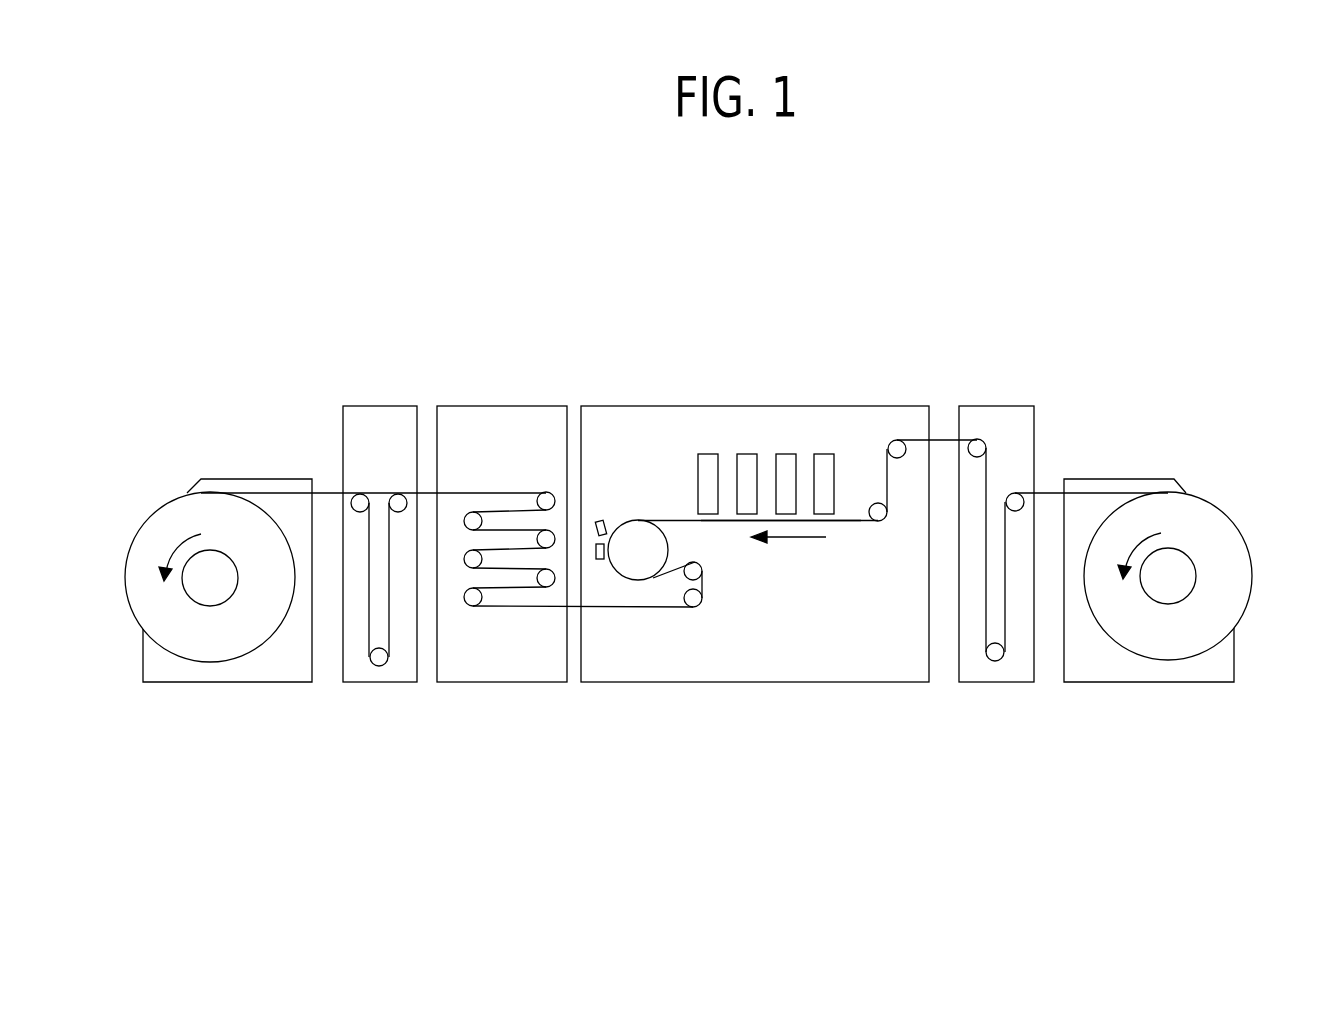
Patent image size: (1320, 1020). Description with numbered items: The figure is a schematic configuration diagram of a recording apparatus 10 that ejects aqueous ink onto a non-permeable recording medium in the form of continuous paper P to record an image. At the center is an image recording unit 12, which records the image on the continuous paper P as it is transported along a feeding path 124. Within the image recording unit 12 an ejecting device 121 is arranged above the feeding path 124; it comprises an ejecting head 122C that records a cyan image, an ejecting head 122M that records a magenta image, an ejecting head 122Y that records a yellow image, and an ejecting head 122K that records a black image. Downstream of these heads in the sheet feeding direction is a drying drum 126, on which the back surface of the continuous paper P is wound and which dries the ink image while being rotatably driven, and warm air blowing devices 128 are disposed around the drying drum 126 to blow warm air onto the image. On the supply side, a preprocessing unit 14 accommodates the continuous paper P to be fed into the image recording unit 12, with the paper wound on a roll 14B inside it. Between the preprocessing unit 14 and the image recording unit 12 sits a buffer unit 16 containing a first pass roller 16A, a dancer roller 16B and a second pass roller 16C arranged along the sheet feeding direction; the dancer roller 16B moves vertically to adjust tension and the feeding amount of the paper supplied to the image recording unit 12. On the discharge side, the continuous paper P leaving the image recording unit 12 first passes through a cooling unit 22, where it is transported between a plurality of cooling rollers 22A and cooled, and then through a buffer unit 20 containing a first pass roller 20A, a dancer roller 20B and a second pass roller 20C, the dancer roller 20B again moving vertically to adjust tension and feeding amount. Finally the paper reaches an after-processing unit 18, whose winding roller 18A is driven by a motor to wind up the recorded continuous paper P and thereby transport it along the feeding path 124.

The recording apparatus 10 is at (1083, 275).
The image recording unit 12 is at (919, 395).
The preprocessing unit 14 is at (1128, 455).
The winding roll 14B is at (1208, 503).
The buffer unit 16 is at (1000, 395).
The first pass roller 16A is at (1012, 496).
The dancer roller 16B is at (994, 656).
The second pass roller 16C is at (983, 445).
The after-processing unit 18 is at (253, 475).
The winding roller 18A is at (168, 497).
The buffer unit 20 is at (377, 397).
The first pass roller 20A is at (397, 496).
The dancer roller 20B is at (378, 658).
The second pass roller 20C is at (357, 497).
The cooling unit 22 is at (507, 397).
The cooling rollers 22A is at (545, 499).
The ejecting device 121 is at (905, 363).
The ejecting head 122C is at (706, 453).
The ejecting head 122M is at (745, 453).
The ejecting head 122Y is at (785, 453).
The ejecting head 122K is at (823, 453).
The feeding path 124 is at (668, 519).
The drying drum 126 is at (655, 545).
The warm air blowing devices 128 is at (594, 524).
The continuous paper P is at (860, 521).